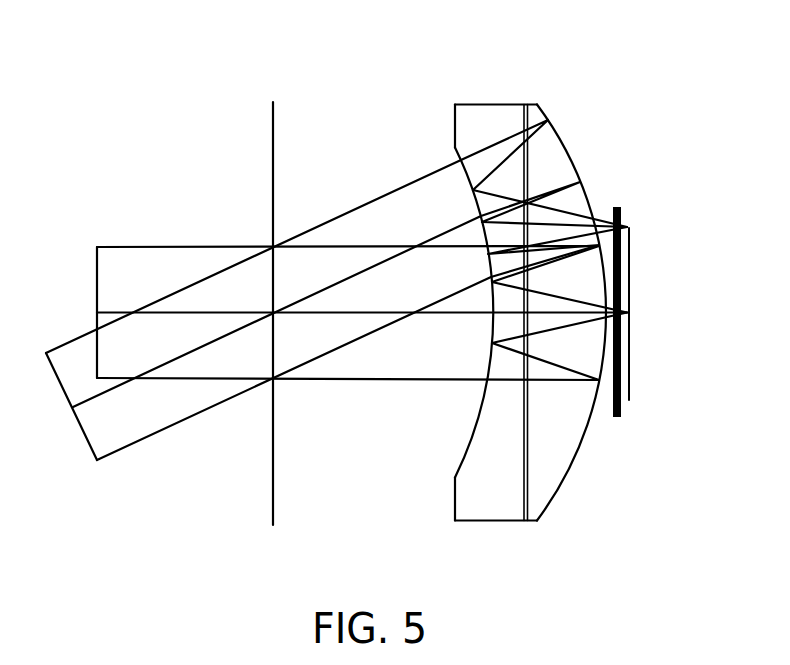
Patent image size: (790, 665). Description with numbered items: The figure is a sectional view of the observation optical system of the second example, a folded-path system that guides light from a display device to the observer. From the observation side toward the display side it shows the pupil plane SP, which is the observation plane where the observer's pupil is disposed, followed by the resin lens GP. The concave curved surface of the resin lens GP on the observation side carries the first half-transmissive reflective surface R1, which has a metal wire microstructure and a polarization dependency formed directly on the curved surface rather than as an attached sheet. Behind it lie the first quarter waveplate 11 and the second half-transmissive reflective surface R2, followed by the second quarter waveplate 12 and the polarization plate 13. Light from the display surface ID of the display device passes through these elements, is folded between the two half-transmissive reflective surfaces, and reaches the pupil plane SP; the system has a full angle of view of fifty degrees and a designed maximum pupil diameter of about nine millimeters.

The pupil plane SP is at (273, 93).
The resin lens GP is at (501, 314).
The display surface ID is at (639, 321).
The first half-transmissive reflective surface R1 is at (460, 465).
The second half-transmissive reflective surface R2 is at (547, 508).
The first quarter waveplate 11 is at (525, 521).
The second quarter waveplate 12 is at (616, 417).
The polarization plate 13 is at (620, 417).